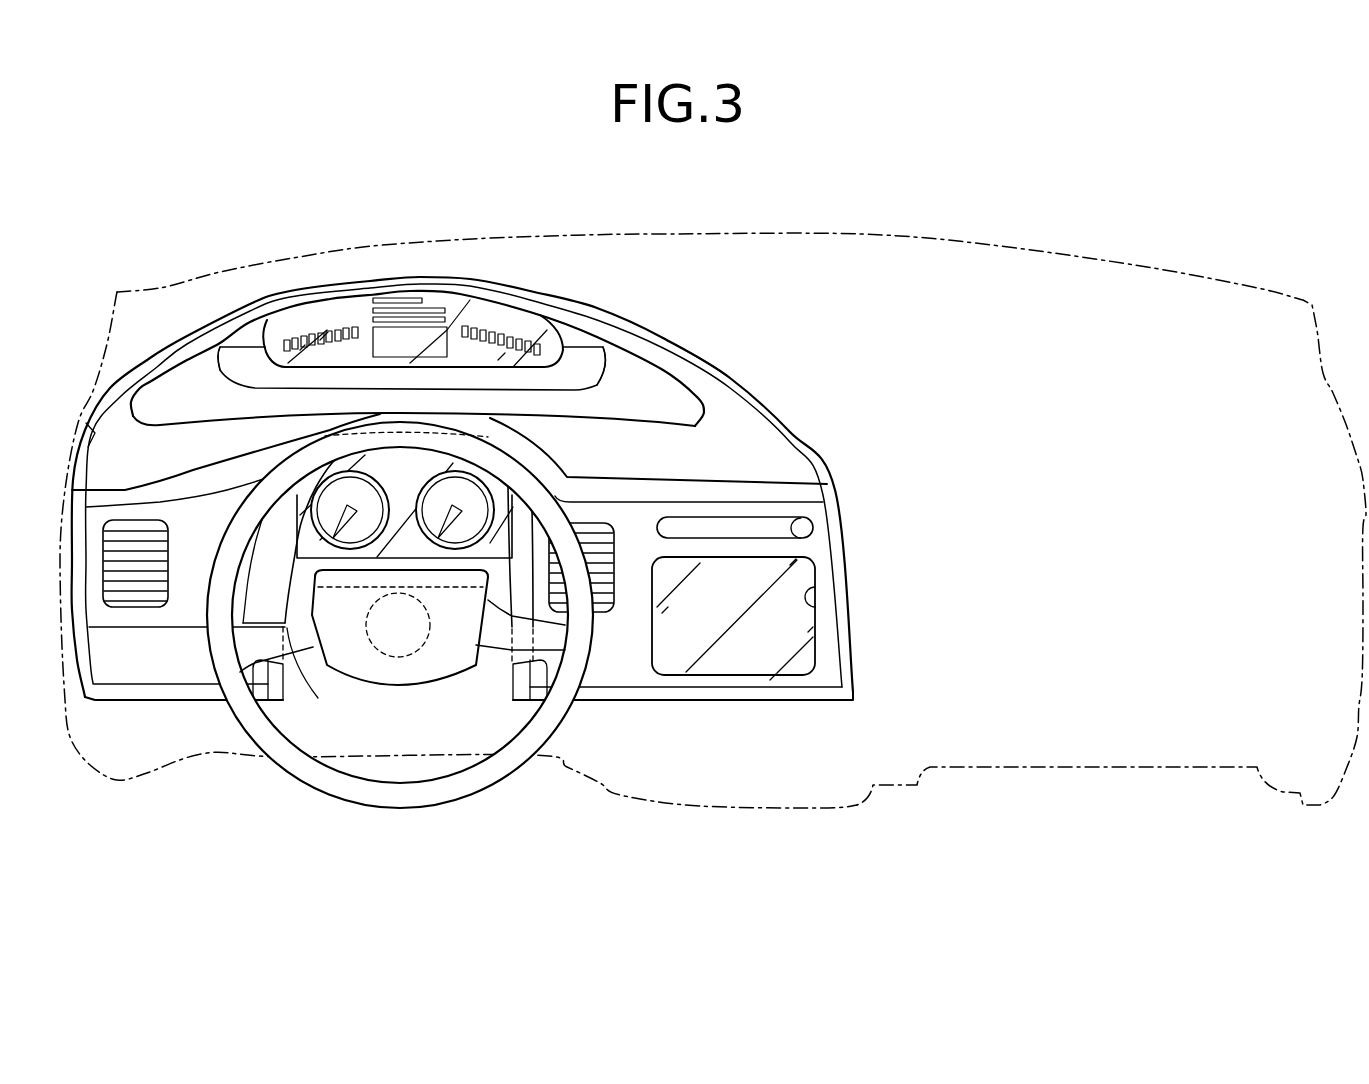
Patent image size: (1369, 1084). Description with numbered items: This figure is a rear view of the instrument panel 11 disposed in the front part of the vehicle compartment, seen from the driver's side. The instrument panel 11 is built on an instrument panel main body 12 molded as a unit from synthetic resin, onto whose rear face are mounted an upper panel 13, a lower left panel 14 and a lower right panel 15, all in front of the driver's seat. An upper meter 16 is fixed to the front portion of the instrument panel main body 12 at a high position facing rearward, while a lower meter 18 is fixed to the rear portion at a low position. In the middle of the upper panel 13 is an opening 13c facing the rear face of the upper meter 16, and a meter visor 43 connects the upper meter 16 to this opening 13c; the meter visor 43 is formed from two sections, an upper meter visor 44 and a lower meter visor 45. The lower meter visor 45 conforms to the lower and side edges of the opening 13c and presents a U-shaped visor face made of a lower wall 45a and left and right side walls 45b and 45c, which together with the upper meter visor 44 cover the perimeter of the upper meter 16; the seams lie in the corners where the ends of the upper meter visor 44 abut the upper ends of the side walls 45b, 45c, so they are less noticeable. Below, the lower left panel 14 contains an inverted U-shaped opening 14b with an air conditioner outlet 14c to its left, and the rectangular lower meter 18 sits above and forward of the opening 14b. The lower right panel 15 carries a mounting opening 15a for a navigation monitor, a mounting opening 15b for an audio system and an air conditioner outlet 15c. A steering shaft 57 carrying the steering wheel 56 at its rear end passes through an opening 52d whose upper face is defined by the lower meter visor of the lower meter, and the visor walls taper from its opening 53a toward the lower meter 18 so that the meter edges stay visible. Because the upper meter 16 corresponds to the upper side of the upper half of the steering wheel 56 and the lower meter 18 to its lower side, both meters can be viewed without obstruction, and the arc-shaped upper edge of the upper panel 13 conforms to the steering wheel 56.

The instrument panel 11 is at (776, 205).
The instrument panel main body 12 is at (1010, 247).
The upper panel 13 is at (797, 408).
The opening 13c is at (145, 393).
The lower left panel 14 is at (123, 712).
The inverted U-shaped opening 14b is at (512, 617).
The air conditioner outlet 14c is at (130, 527).
The lower right panel 15 is at (738, 712).
The mounting opening for a monitor of a navigation system 15a is at (813, 590).
The mounting opening for an audio system 15b is at (813, 533).
The air conditioner outlet 15c is at (633, 497).
The upper meter 16 is at (491, 304).
The lower meter 18 is at (378, 468).
The meter visor 43 is at (752, 292).
The upper meter visor 44 is at (583, 322).
The lower meter visor 45 is at (668, 363).
The lower wall 45a is at (455, 378).
The left side wall 45b is at (242, 350).
The right side wall 45c is at (197, 397).
The opening 52d is at (388, 590).
The opening of the meter visor 53a is at (318, 497).
The steering wheel 56 is at (427, 795).
The steering shaft 57 is at (412, 652).